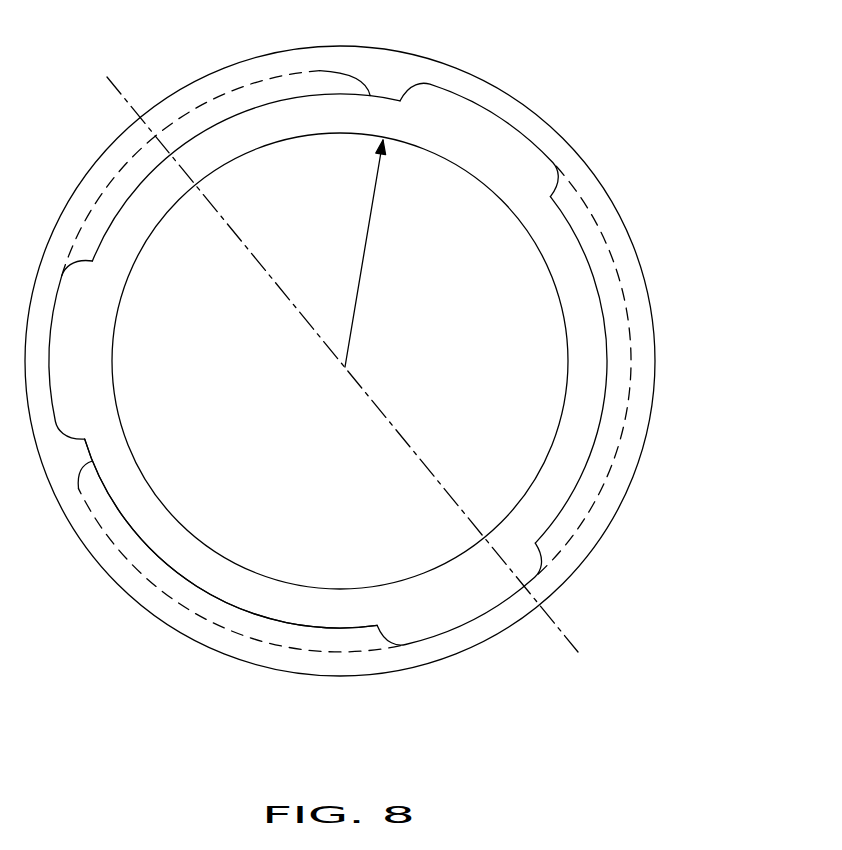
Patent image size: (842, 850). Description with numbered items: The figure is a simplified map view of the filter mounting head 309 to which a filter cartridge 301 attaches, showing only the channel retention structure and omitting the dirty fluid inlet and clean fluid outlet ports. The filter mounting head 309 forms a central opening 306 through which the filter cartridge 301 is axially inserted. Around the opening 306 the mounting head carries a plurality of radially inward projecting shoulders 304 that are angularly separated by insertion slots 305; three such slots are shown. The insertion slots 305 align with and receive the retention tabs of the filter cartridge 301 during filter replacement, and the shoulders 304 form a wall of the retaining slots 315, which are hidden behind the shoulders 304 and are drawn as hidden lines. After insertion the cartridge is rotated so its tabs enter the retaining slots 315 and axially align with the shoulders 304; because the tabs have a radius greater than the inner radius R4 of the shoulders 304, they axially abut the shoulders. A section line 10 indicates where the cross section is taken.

The section line 10- 10 is at (107, 77).
The filter cartridge 301 is at (560, 497).
The radially inward projecting shoulders 304 is at (113, 207).
The insertion slots 305 is at (518, 158).
The opening 306 is at (353, 617).
The filter mounting head 309 is at (605, 567).
The retaining slots 315 is at (217, 100).
The inner radius of the shoulders R4 is at (371, 253).